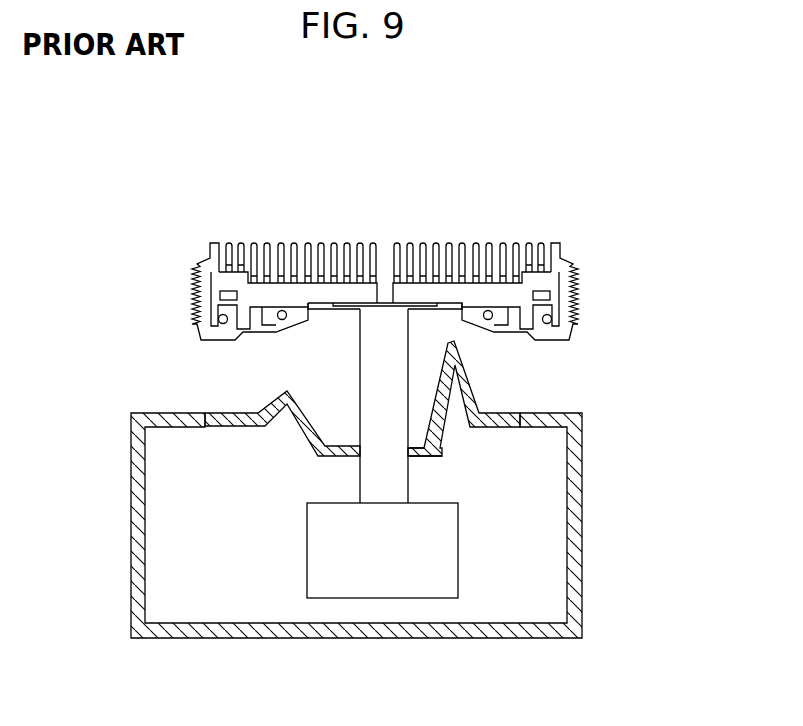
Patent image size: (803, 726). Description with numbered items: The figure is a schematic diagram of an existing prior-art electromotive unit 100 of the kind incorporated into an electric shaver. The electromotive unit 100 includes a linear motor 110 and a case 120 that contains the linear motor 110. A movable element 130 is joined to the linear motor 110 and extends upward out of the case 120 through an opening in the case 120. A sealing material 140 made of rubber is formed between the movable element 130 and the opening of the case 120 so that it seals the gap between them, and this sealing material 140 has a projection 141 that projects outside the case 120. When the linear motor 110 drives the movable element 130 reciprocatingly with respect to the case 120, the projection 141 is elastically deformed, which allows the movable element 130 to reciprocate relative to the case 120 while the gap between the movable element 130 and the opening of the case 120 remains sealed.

The electromotive unit 100 is at (653, 299).
The linear motor 110 is at (316, 568).
The case 120 is at (574, 532).
The movable element 130 is at (367, 349).
The sealing material 140 is at (420, 455).
The projection 141 is at (278, 401).